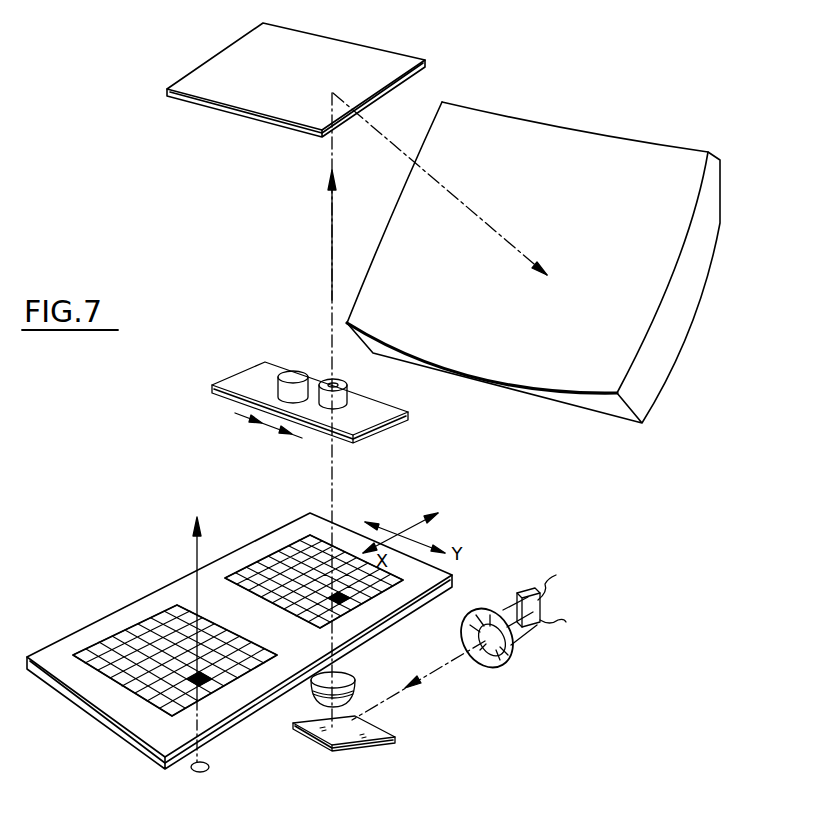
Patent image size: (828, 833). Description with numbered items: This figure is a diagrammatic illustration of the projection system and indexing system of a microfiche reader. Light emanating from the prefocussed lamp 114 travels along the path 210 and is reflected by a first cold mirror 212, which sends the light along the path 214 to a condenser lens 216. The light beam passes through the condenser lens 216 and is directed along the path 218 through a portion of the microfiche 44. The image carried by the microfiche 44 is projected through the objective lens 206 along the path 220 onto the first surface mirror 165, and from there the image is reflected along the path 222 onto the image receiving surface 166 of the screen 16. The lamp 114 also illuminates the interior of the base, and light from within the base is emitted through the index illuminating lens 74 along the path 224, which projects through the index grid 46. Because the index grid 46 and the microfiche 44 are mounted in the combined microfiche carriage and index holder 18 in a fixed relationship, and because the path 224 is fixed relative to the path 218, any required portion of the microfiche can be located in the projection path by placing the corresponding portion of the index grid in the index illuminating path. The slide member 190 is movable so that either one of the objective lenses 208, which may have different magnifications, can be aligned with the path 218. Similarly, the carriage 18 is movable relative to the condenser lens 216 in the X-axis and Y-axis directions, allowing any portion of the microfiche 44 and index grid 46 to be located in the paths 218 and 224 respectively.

The screen 16 is at (642, 387).
The combined microfiche carriage and index holder 18 is at (185, 582).
The microfiche 44 is at (283, 555).
The index grid 46 is at (148, 633).
The index illuminating lens 74 is at (210, 770).
The prefocussed lamp 114 is at (520, 645).
The first surface mirror 165 is at (247, 93).
The image receiving surface 166 is at (647, 297).
The slide member 190 is at (243, 380).
The objective lens 206 is at (350, 395).
The objective lenses 208 is at (333, 395).
The path 210 is at (442, 668).
The first cold mirror 212 is at (383, 730).
The path 214 is at (330, 720).
The condenser lens 216 is at (338, 673).
The path 218 is at (337, 633).
The path 220 is at (332, 210).
The path 222 is at (403, 153).
The path 224 is at (202, 740).